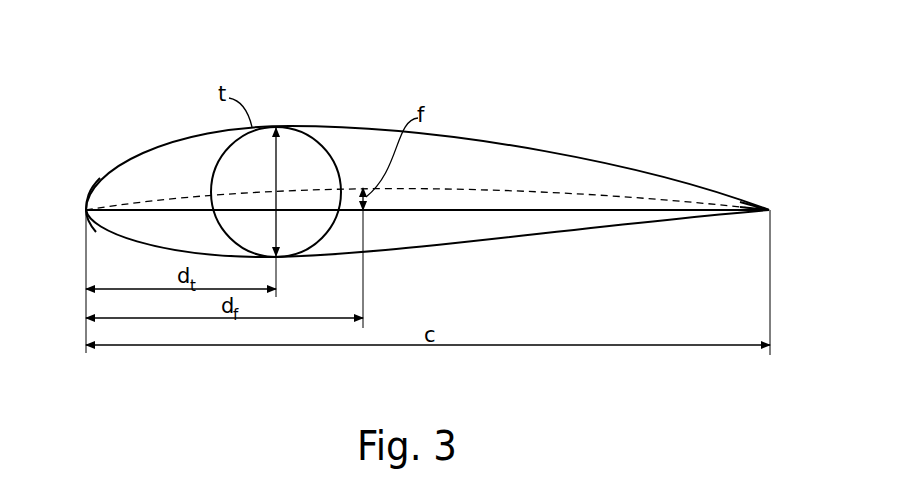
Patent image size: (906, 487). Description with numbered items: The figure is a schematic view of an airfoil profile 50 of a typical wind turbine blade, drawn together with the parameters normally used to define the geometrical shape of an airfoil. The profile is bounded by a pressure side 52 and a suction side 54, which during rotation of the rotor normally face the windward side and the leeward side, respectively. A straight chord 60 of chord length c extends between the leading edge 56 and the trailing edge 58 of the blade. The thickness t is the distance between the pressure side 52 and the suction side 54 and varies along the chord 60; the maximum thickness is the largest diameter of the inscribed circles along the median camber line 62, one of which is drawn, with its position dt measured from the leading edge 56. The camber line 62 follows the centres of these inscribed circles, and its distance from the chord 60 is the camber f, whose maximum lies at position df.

The airfoil profile 50 is at (408, 58).
The pressure side 52 is at (563, 229).
The suction side 54 is at (512, 140).
The leading edge 56 is at (86, 207).
The trailing edge 58 is at (770, 210).
The chord 60 is at (598, 210).
The camber line 62 is at (415, 188).